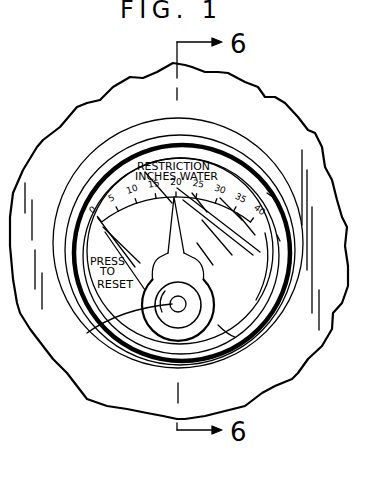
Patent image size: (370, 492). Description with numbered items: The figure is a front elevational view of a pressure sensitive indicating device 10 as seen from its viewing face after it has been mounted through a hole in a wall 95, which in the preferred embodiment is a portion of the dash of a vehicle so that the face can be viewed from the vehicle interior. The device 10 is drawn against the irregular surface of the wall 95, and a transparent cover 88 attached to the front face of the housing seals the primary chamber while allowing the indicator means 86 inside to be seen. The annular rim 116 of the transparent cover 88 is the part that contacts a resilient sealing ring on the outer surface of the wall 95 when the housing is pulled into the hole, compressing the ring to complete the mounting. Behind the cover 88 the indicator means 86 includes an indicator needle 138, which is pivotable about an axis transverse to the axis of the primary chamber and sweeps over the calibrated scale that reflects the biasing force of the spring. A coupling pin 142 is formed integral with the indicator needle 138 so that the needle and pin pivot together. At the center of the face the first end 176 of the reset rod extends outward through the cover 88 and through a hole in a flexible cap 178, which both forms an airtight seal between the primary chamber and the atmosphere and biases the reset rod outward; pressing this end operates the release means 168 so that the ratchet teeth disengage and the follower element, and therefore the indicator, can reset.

The pressure sensitive indicating device 10 is at (273, 132).
The wall 95 is at (87, 393).
The indicator means 86 is at (188, 234).
The indicator needle 138 is at (170, 216).
The coupling pin 142 is at (202, 272).
The first end of reset rod 176 is at (194, 296).
The flexible cap 178 is at (91, 331).
The release means 168 is at (130, 327).
The transparent cover 88 is at (159, 364).
The annular rim 116 is at (237, 350).